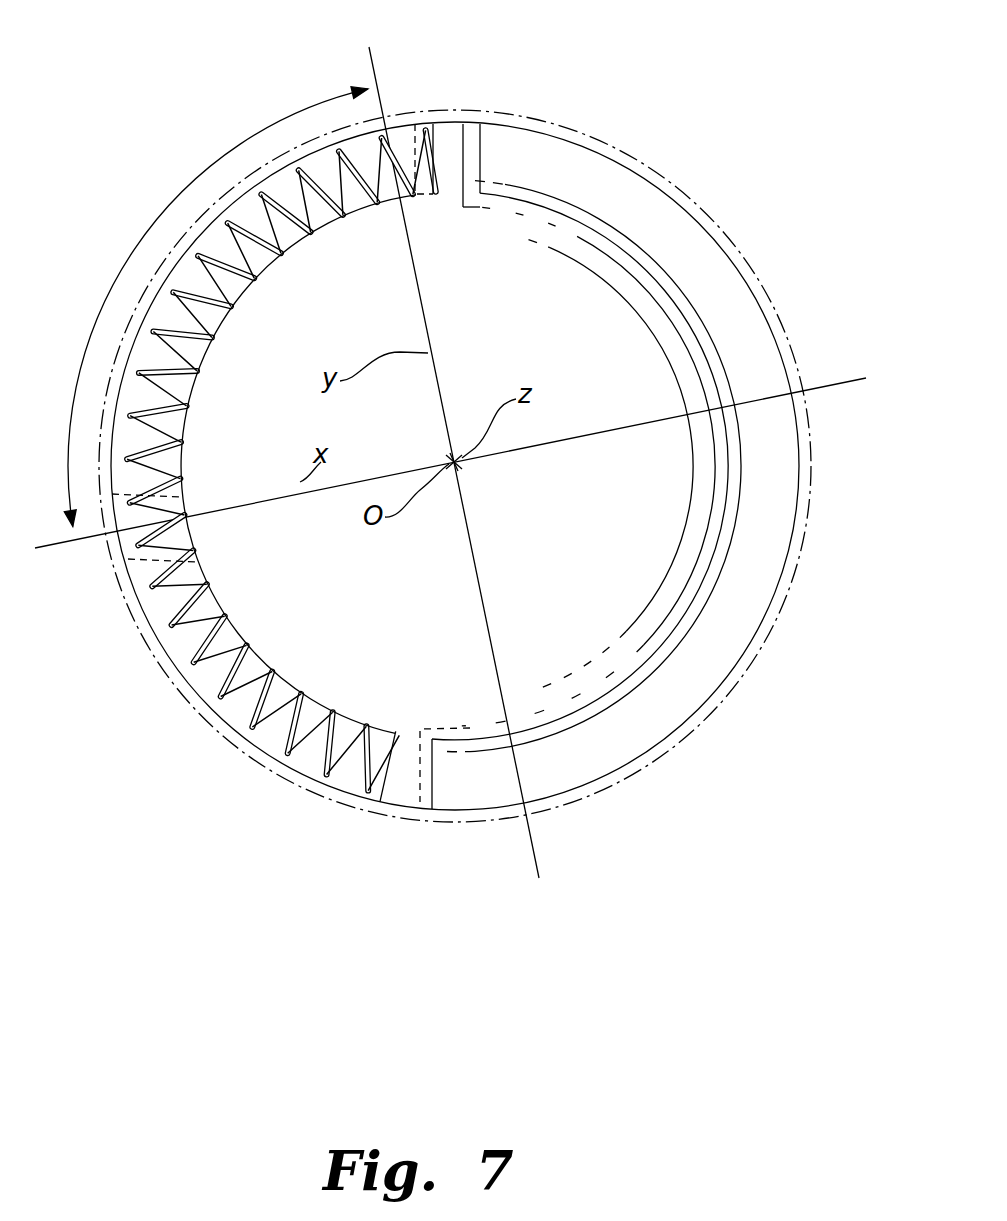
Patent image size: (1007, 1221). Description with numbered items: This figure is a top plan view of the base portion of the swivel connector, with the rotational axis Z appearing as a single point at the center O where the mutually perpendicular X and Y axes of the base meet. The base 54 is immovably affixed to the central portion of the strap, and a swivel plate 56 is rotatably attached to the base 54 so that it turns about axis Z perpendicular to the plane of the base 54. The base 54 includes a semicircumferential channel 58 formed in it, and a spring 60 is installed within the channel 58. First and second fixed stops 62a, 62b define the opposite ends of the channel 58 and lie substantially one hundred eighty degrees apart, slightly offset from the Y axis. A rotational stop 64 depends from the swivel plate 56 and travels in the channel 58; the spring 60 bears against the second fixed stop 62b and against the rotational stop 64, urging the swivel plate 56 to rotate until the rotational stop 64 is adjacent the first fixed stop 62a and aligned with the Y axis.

The base 54 is at (187, 692).
The swivel plate 56 is at (257, 763).
The semicircumferential channel 58 is at (140, 564).
The spring 60 is at (200, 565).
The first fixed stop 62a is at (448, 138).
The second fixed stop 62b is at (396, 790).
The rotational stop 64 is at (415, 194).